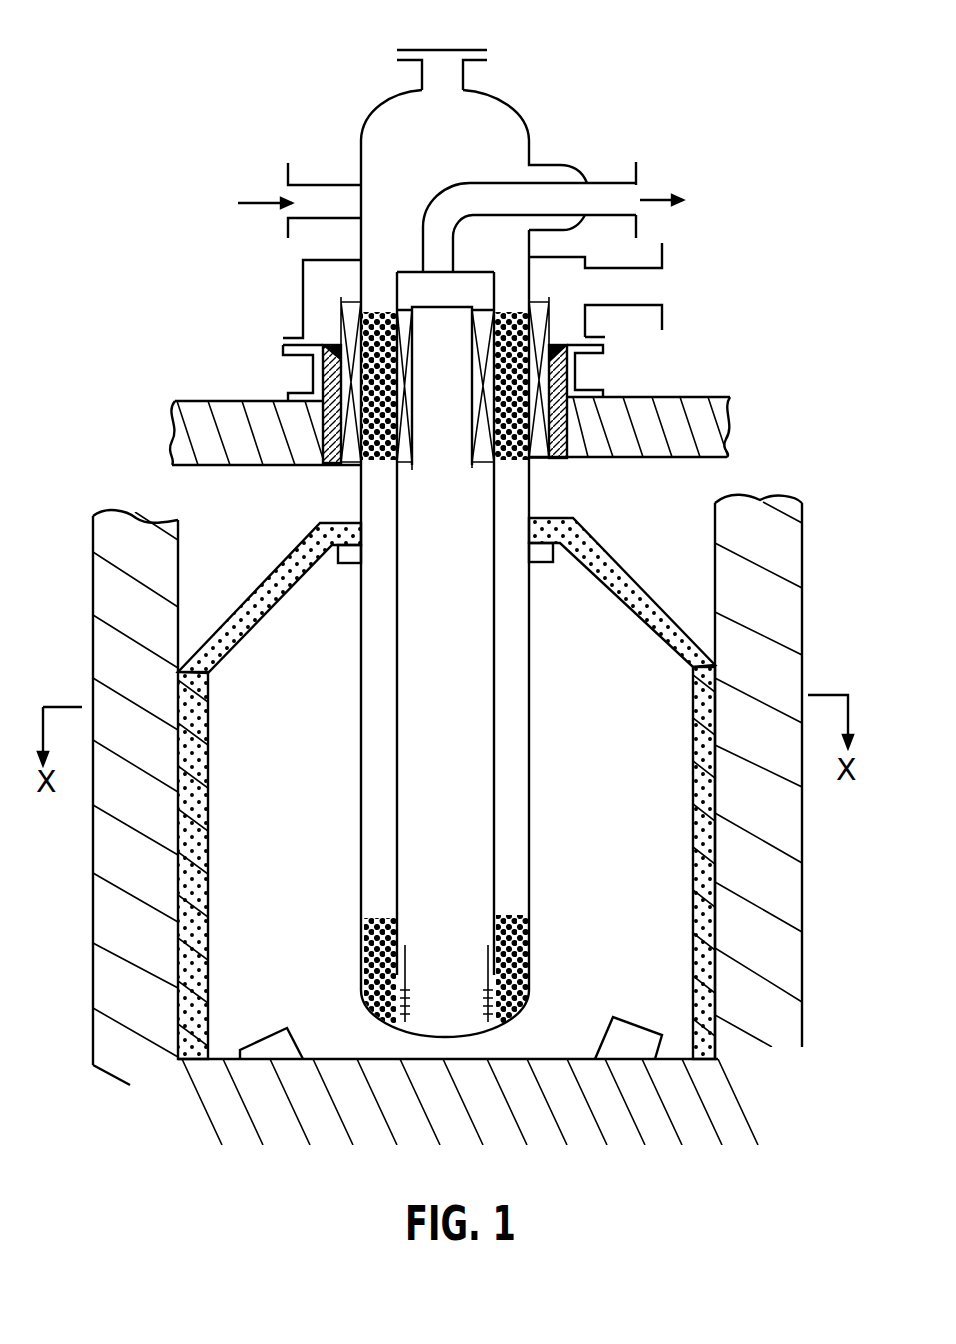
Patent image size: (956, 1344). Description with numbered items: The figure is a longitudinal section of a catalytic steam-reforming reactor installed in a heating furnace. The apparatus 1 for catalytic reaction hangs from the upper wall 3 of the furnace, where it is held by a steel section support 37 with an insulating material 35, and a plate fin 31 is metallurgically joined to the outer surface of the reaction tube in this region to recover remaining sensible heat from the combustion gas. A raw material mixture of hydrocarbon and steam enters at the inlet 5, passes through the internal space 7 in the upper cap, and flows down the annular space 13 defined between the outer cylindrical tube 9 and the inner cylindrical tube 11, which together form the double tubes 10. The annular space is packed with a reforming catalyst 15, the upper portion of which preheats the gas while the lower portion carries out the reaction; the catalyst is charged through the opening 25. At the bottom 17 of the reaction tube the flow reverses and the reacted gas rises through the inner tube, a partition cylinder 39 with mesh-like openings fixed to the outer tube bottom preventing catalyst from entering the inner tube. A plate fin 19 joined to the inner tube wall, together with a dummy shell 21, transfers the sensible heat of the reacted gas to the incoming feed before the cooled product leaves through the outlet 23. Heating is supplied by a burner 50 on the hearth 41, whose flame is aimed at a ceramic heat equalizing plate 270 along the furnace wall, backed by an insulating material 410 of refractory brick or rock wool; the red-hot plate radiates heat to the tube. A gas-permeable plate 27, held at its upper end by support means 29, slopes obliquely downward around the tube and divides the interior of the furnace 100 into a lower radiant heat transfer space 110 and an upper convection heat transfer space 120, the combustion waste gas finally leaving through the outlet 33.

The apparatus for catalytic reaction 1 is at (365, 118).
The upper wall 3 is at (165, 437).
The inlet 5 is at (297, 195).
The internal space 7 is at (447, 151).
The outer cylindrical tube 9 is at (363, 727).
The double tubes 10 is at (375, 818).
The inner cylindrical tube 11 is at (398, 757).
The annular space 13 is at (370, 280).
The reforming catalyst 15 is at (370, 443).
The bottom of the reaction tube 17 is at (440, 1038).
The plate fin 19 is at (472, 393).
The dummy shell 21 is at (418, 447).
The outlet 23 is at (630, 195).
The opening for packing a catalyst 25 is at (447, 68).
The gas-permeable plate 27 is at (240, 612).
The support means 29 is at (545, 562).
The plate fin 31 is at (543, 373).
The outlet for the combustion waste gas 33 is at (645, 285).
The insulating material 35 is at (557, 460).
The steel section support 37 is at (297, 377).
The partition cylinder 39 is at (490, 993).
The bottom wall of the furnace 41 is at (340, 1070).
The burner 50 is at (260, 1048).
The furnace 100 is at (678, 533).
The radiant heat transfer space 110 is at (318, 668).
The convection heat transfer space 120 is at (283, 519).
The ceramic heat equalizing plate 270 is at (200, 902).
The insulating material 410 is at (117, 983).